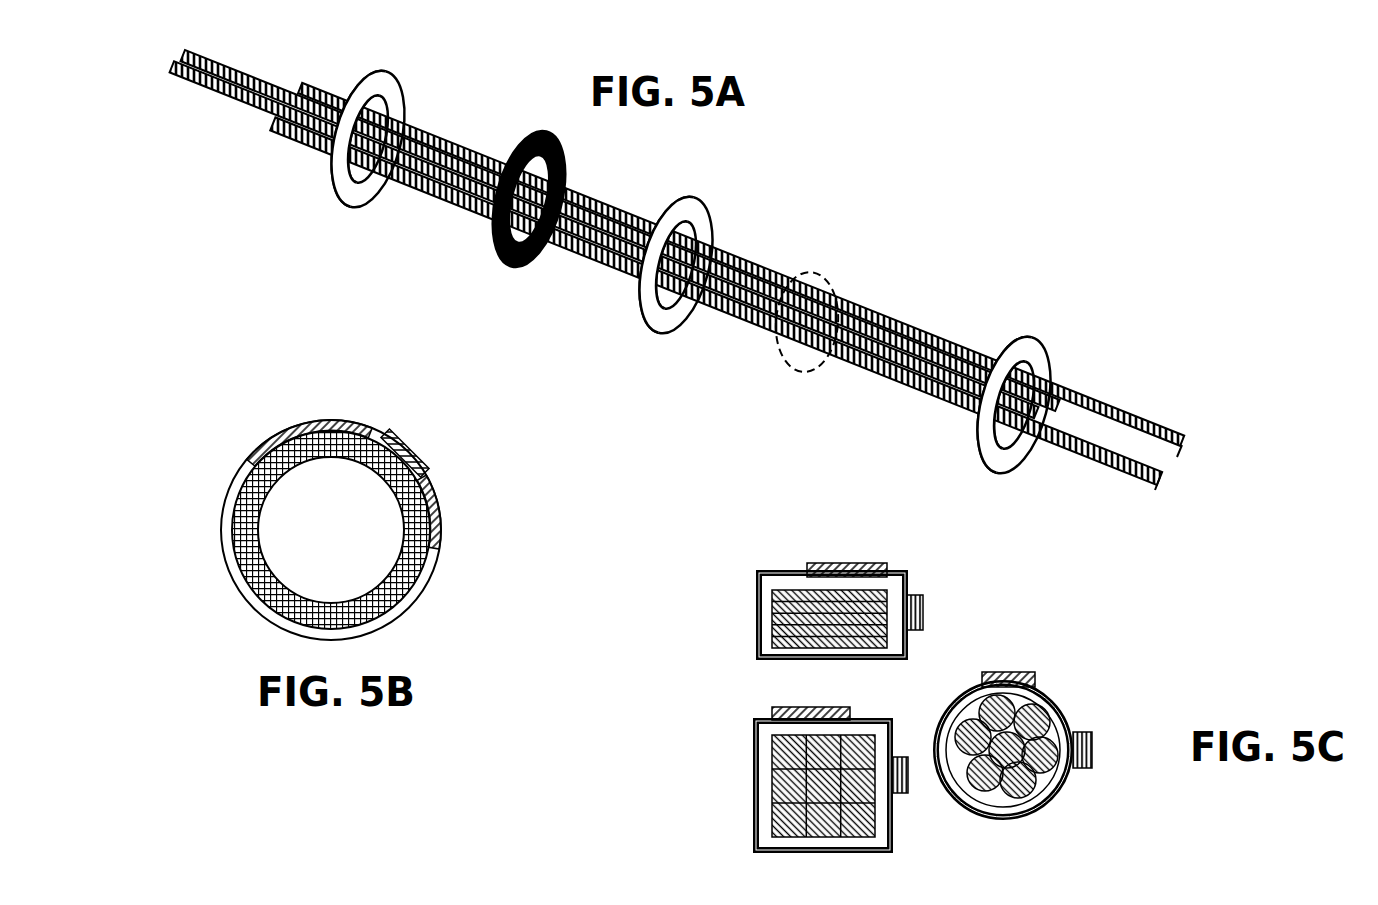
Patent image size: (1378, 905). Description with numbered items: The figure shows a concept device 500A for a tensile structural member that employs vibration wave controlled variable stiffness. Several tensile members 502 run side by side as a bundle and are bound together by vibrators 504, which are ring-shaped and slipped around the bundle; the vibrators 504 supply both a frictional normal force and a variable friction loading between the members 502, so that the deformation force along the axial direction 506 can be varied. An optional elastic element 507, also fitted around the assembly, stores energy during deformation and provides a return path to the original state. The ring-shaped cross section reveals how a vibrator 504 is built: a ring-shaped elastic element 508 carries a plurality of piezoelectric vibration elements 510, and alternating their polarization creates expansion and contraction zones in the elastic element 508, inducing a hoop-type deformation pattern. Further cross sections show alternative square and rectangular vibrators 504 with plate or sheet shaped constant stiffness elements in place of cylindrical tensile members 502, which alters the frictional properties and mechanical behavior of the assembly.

In FIG. 5A, the concept device 500A is at (1168, 195).
In FIG. 5A, the tensile members 502 is at (809, 273).
In FIG. 5A, the vibrators 504 is at (397, 89).
In FIG. 5B, the vibrators 504 is at (209, 468).
In FIG. 5A, the axial direction 506 is at (1250, 508).
In FIG. 5A, the elastic element 507 is at (531, 258).
In FIG. 5B, the ring-shaped elastic element 508 is at (413, 558).
In FIG. 5B, the vibration elements 510 is at (395, 433).
In FIG. 5C, the vibration elements 510 is at (887, 565).